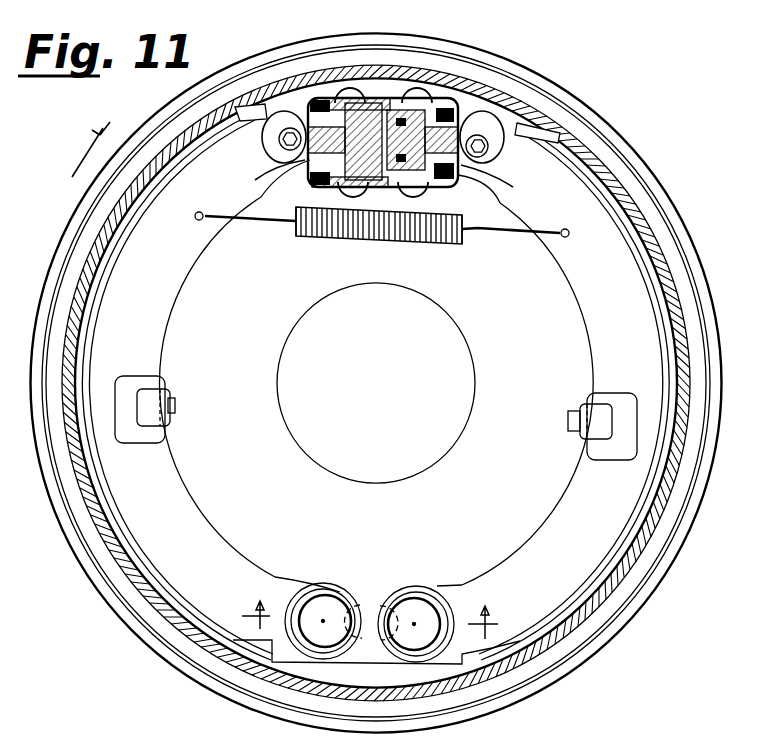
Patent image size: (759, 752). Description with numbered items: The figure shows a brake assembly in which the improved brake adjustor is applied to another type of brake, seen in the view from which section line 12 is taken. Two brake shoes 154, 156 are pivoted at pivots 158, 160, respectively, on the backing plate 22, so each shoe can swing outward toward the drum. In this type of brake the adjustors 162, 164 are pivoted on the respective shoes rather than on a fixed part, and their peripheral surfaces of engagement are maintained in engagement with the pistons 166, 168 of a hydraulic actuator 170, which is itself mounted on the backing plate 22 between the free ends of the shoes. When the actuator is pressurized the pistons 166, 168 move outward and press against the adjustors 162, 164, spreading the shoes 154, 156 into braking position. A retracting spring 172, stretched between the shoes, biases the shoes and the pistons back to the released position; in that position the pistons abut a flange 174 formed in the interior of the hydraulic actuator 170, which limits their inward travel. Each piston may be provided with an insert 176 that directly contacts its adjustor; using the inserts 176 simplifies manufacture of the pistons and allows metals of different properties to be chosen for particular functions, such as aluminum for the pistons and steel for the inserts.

The section line 12 is at (371, 611).
The backing plate 22 is at (564, 333).
The shoe 154 is at (611, 233).
The shoe 156 is at (125, 503).
The pivot 158 is at (407, 607).
The pivot 160 is at (310, 607).
The adjustor 162 is at (491, 125).
The adjustor 164 is at (267, 137).
The piston 166 is at (432, 188).
The piston 168 is at (337, 178).
The hydraulic actuator 170 is at (312, 168).
The retracting spring 172 is at (449, 242).
The flange 174 is at (381, 196).
The insert 176 is at (333, 148).